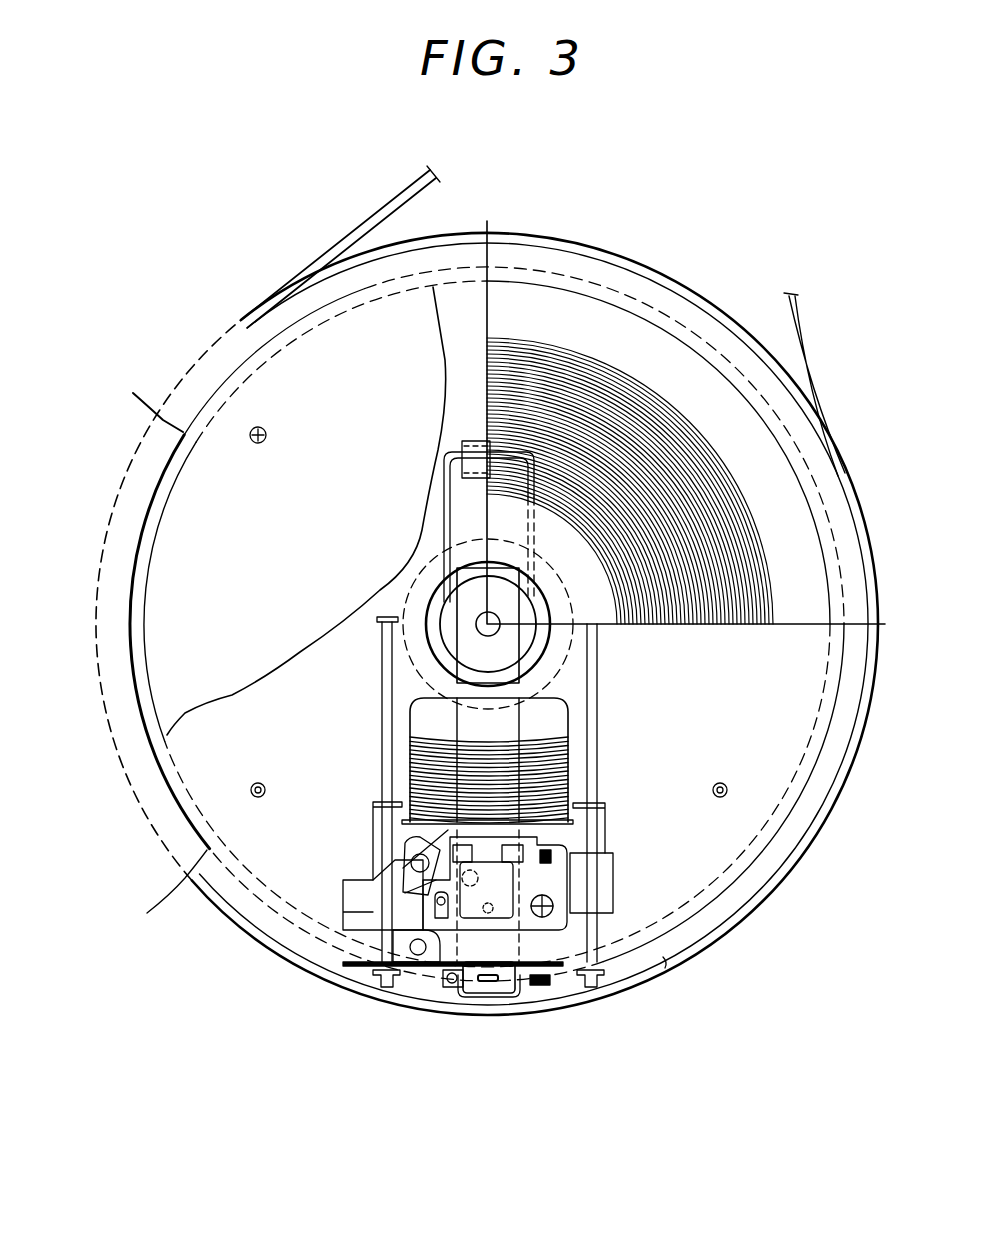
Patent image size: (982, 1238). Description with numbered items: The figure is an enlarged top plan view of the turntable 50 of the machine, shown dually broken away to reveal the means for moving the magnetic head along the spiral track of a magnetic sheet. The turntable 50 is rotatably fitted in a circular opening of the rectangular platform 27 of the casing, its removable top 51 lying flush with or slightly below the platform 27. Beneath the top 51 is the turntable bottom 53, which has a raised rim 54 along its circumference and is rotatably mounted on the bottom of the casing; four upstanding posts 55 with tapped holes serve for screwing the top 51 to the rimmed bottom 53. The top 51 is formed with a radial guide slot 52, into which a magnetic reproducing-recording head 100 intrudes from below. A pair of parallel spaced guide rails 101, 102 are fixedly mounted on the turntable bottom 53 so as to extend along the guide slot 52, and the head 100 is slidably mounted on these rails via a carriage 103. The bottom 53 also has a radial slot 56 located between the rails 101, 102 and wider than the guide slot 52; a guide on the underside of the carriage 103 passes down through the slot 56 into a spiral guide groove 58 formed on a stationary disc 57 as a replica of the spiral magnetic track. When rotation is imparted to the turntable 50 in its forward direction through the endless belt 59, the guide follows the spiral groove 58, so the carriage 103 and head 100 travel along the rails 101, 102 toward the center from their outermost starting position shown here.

The platform 27 is at (163, 890).
The turntable 50 is at (730, 927).
The top 51 is at (172, 706).
The radial guide slot 52 is at (515, 943).
The turntable bottom 53 is at (720, 853).
The raised rim 54 is at (665, 960).
The upstanding posts 55 is at (258, 798).
The radial slot 56 is at (408, 727).
The stationary disc 57 is at (641, 336).
The spiral guide groove 58 is at (552, 778).
The endless belt 59 is at (367, 223).
The magnetic reproducing-recording head 100 is at (486, 993).
The guide rail 101 is at (388, 690).
The guide rail 102 is at (600, 703).
The carriage 103 is at (378, 808).